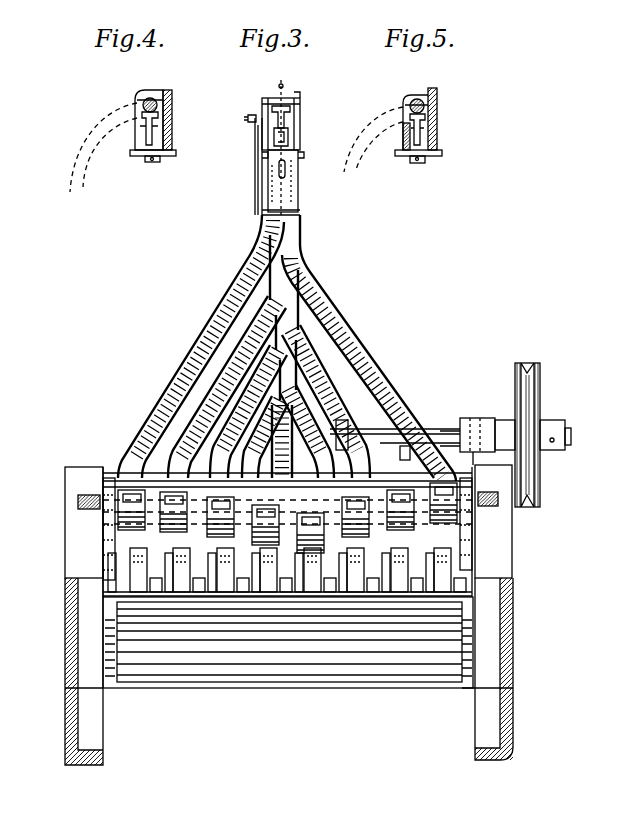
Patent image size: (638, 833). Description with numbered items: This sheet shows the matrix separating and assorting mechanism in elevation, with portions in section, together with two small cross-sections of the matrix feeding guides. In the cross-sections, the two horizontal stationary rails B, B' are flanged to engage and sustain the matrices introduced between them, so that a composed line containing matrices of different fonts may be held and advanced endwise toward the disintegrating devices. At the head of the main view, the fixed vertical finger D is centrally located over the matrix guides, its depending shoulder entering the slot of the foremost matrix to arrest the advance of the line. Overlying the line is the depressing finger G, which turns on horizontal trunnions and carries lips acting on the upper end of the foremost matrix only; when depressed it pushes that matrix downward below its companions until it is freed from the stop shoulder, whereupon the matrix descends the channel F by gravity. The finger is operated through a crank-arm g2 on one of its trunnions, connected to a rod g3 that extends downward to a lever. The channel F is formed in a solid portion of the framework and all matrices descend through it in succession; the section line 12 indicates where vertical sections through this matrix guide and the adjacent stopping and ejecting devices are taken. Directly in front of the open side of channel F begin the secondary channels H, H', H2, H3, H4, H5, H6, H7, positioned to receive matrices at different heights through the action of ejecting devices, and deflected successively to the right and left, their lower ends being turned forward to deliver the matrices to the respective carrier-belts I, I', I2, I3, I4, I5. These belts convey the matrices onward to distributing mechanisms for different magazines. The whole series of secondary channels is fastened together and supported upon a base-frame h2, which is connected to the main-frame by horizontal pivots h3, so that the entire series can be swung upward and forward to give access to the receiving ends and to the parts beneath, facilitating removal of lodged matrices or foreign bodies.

In FIG. 3, the section line 12 is at (285, 138).
In FIG. 3, the fixed vertical finger D is at (292, 100).
In FIG. 3, the depressing finger G is at (296, 112).
In FIG. 4, the casing A is at (147, 130).
In FIG. 5, the casing A is at (430, 115).
In FIG. 3, the casing A is at (300, 122).
In FIG. 3, the channel F is at (298, 184).
In FIG. 3, the crank-arm g2 is at (250, 114).
In FIG. 3, the rod g3 is at (255, 206).
In FIG. 3, the secondary channel H is at (201, 346).
In FIG. 3, the secondary channel H' is at (369, 348).
In FIG. 3, the secondary channel H2 is at (218, 388).
In FIG. 3, the secondary channel H3 is at (322, 360).
In FIG. 3, the secondary channel H4 is at (246, 412).
In FIG. 3, the secondary channel H5 is at (338, 392).
In FIG. 3, the secondary channel H6 is at (246, 443).
In FIG. 3, the secondary channel H7 is at (380, 410).
In FIG. 3, the base-frame h2 is at (108, 478).
In FIG. 3, the horizontal pivots h3 is at (78, 503).
In FIG. 3, the carrier-belt I is at (150, 565).
In FIG. 3, the carrier-belt I' is at (465, 562).
In FIG. 3, the carrier-belt I2 is at (173, 557).
In FIG. 3, the carrier-belt I3 is at (415, 546).
In FIG. 3, the carrier-belt I4 is at (220, 559).
In FIG. 3, the carrier-belt I5 is at (358, 556).
In FIG. 5, the stationary rail B is at (391, 137).
In FIG. 4, the stationary rail B' is at (164, 126).
In FIG. 5, the stationary rail B' is at (438, 125).